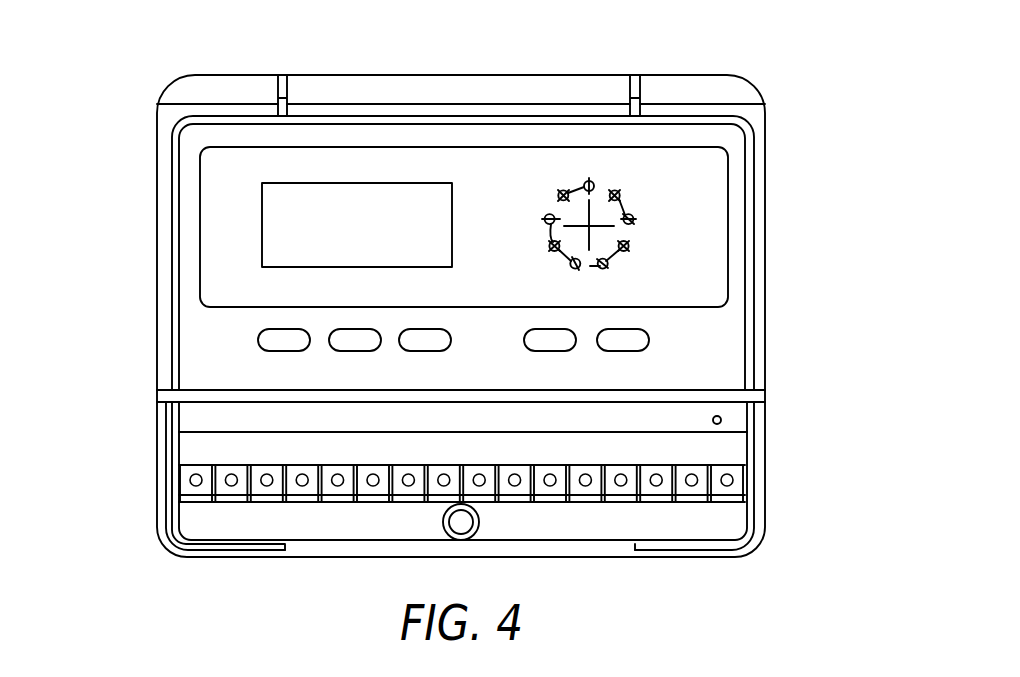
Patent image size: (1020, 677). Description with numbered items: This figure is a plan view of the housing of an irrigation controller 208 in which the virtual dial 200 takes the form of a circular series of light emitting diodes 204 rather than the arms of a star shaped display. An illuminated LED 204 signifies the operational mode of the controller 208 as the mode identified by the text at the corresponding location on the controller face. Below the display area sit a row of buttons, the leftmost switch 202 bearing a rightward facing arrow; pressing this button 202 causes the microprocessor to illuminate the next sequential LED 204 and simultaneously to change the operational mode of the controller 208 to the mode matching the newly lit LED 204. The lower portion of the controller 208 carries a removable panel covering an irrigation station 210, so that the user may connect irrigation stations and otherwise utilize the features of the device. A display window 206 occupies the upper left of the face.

The virtual dial 200 is at (642, 234).
The switch 202 is at (258, 340).
The light emitting diodes 204 is at (634, 218).
The display 206 is at (262, 183).
The irrigation controller 208 is at (765, 418).
The irrigation station 210 is at (318, 516).